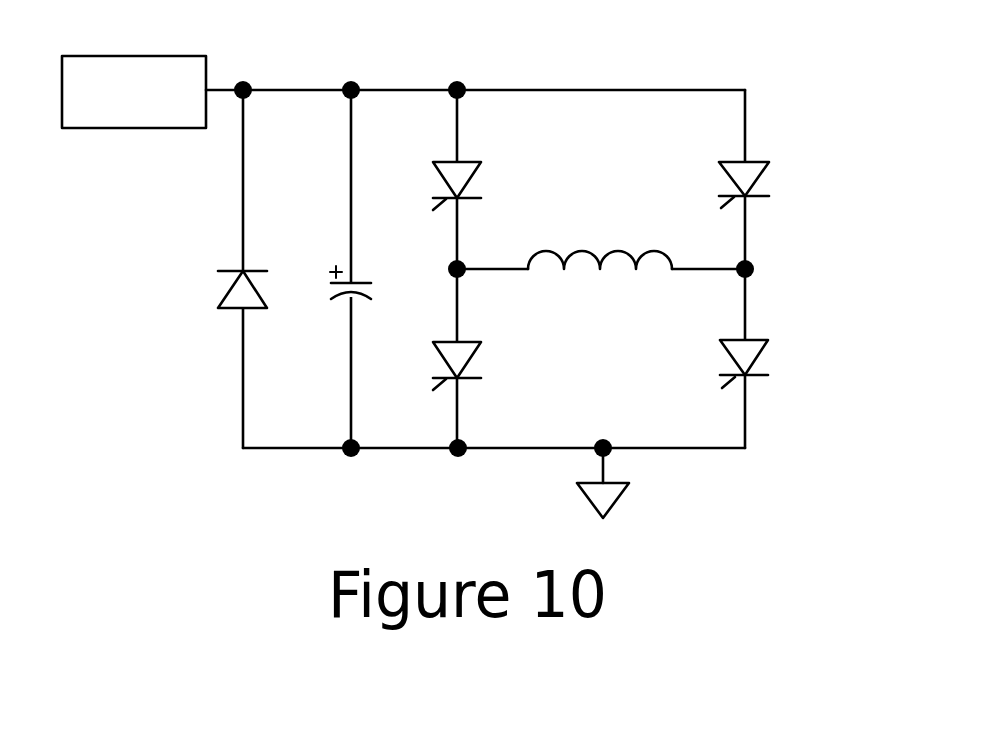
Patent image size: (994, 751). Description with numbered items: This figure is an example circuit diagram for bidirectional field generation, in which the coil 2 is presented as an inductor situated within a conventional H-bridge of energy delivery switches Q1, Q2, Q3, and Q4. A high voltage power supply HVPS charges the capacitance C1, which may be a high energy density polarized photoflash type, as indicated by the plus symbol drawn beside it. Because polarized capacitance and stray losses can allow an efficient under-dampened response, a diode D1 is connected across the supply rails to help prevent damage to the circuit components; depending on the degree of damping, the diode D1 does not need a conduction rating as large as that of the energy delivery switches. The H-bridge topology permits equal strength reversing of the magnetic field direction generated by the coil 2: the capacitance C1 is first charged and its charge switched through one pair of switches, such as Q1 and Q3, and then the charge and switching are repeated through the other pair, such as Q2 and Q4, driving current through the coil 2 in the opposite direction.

The coil 2 is at (608, 232).
The high voltage power supply HVPS is at (152, 92).
The diode D1 is at (259, 259).
The capacitance C1 is at (369, 255).
The energy delivery switch Q1 is at (493, 173).
The energy delivery switch Q2 is at (780, 171).
The energy delivery switch Q3 is at (781, 349).
The energy delivery switch Q4 is at (494, 351).